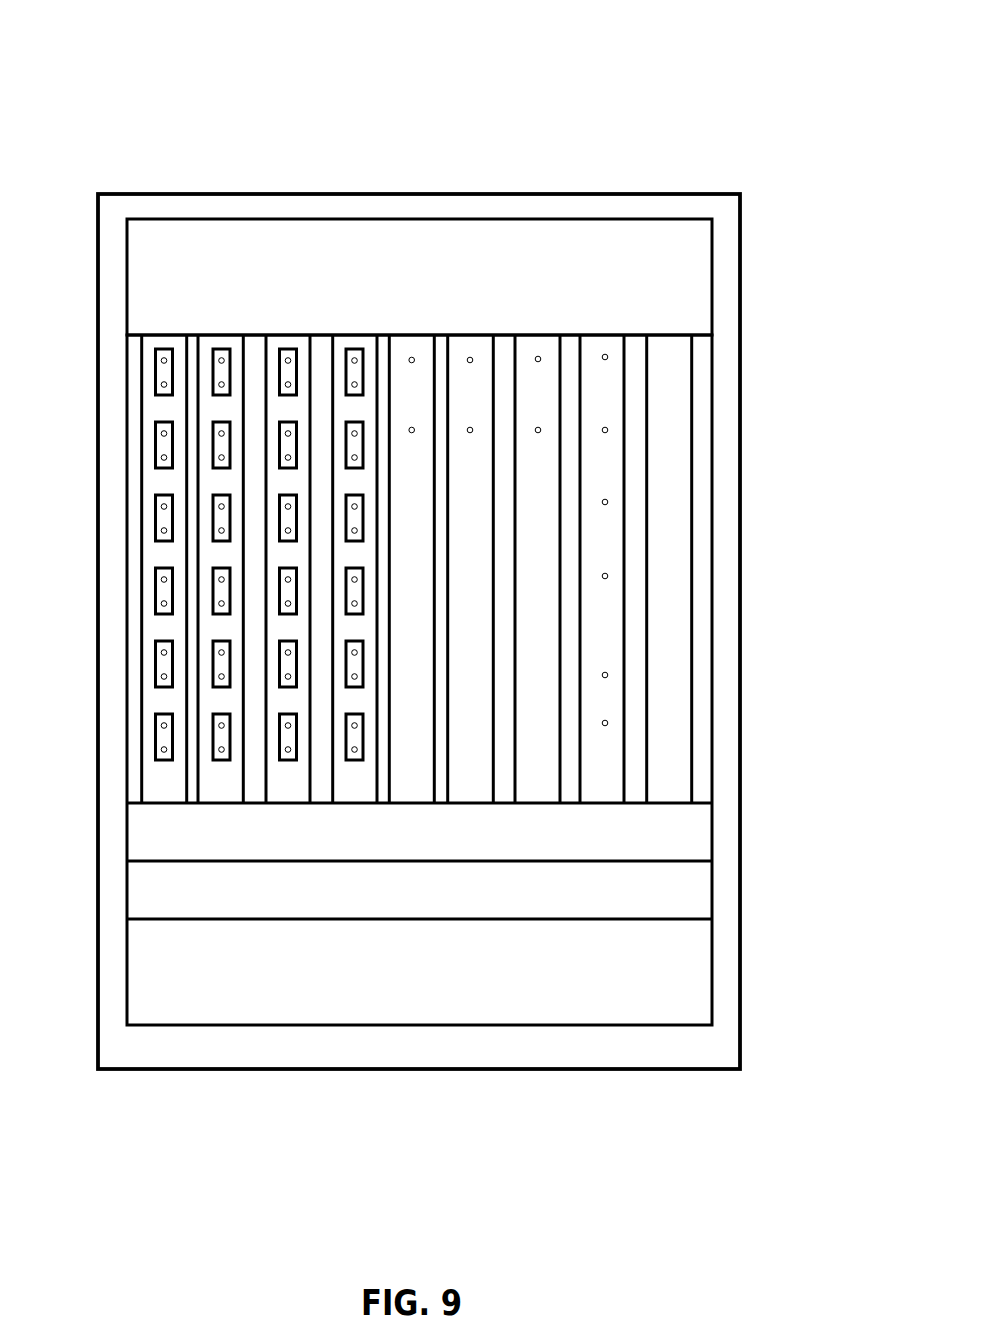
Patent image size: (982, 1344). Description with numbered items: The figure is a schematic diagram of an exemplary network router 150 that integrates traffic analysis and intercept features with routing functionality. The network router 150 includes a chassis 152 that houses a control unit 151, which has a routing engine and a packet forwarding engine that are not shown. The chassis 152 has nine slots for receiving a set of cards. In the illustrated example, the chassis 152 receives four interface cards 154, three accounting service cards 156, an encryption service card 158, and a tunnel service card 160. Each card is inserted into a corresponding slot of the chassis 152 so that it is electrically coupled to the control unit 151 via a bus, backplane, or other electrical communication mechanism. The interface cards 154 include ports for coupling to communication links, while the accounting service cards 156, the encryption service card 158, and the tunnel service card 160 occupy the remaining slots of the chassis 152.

The network router 150 is at (444, 539).
The control unit 151 is at (444, 285).
The chassis 152 is at (533, 193).
The interface cards 154 is at (178, 318).
The accounting service cards 156 is at (522, 320).
The encryption service card 158 is at (719, 569).
The tunnel service card 160 is at (737, 569).